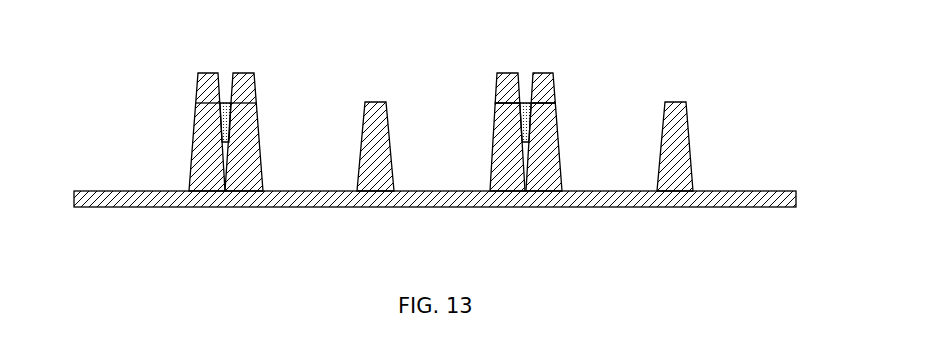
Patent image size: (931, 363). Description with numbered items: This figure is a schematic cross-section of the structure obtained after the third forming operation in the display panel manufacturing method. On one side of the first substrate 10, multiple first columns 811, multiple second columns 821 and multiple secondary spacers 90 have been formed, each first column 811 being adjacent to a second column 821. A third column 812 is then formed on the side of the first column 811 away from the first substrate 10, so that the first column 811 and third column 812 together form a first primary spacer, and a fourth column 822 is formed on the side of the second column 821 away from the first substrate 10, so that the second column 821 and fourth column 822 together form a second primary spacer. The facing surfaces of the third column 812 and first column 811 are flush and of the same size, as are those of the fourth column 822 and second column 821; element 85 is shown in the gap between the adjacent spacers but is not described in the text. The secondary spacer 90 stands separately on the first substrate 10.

The first substrate 10 is at (755, 202).
The first column 811 is at (491, 128).
The third column 812 is at (497, 93).
The second column 821 is at (546, 125).
The fourth column 822 is at (553, 82).
The filling layer between light-emitting structures 85 is at (525, 110).
The secondary spacer 90 is at (681, 110).